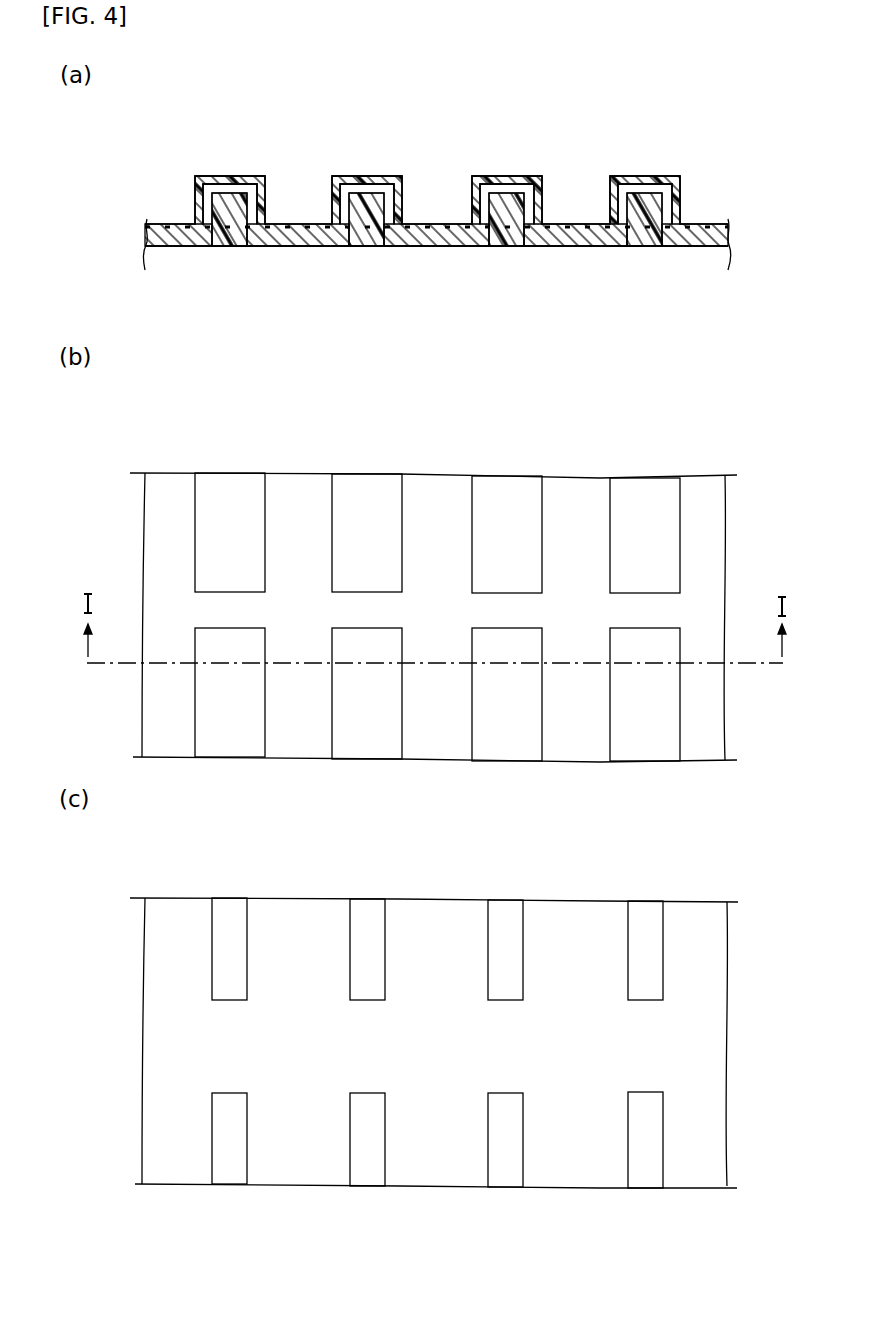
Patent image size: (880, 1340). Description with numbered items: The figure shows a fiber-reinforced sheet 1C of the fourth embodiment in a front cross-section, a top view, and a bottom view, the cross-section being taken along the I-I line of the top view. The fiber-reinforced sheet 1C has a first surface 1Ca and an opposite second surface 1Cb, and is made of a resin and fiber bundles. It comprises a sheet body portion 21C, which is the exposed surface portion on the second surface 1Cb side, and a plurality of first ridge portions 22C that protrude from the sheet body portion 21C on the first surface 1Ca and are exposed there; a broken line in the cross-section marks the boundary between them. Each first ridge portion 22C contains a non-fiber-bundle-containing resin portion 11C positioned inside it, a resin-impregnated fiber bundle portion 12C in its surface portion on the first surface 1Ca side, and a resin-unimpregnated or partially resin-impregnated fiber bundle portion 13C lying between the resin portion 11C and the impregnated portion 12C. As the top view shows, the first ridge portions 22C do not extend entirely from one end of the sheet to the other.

The fiber-reinforced sheet 1C is at (165, 150).
The first surface 1Ca is at (219, 176).
The second surface 1Cb is at (222, 247).
The non-fiber-bundle-containing resin portion 11C is at (363, 185).
The resin-impregnated fiber bundle portion 12C is at (428, 224).
The resin-unimpregnated or partially resin-impregnated fiber bundle portion 13C is at (430, 247).
The sheet body portion 21C is at (498, 247).
The first ridge portion 22C is at (510, 176).